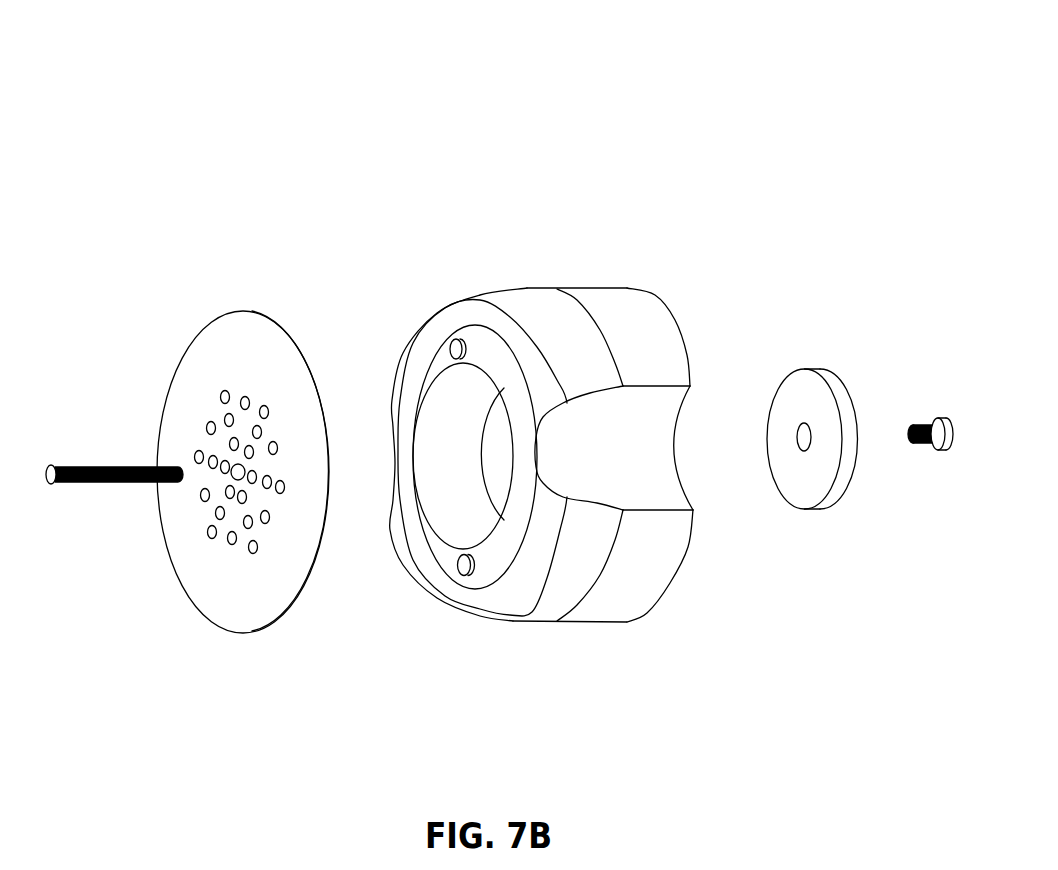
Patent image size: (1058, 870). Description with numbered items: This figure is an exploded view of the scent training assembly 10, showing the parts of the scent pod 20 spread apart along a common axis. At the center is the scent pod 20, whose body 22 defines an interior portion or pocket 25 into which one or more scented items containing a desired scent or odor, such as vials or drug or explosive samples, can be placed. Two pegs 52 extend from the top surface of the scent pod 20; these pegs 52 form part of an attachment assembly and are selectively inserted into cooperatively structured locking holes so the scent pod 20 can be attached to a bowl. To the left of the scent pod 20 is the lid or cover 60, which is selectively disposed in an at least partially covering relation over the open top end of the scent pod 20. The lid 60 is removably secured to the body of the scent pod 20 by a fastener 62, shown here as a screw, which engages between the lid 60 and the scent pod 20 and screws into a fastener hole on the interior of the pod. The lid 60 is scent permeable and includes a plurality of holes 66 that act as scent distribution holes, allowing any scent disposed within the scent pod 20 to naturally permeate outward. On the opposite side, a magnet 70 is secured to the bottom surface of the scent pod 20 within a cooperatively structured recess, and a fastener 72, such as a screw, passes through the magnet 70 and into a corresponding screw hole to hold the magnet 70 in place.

The scent training assembly 10 is at (478, 45).
The scent pod 20 is at (533, 245).
The body 22 is at (575, 322).
The interior portion or pocket 25 is at (449, 507).
The peg 52 is at (455, 340).
The lid or cover 60 is at (233, 298).
The fastener 62 is at (112, 465).
The holes 66 is at (250, 397).
The magnet 70 is at (805, 369).
The fastener 72 is at (925, 422).